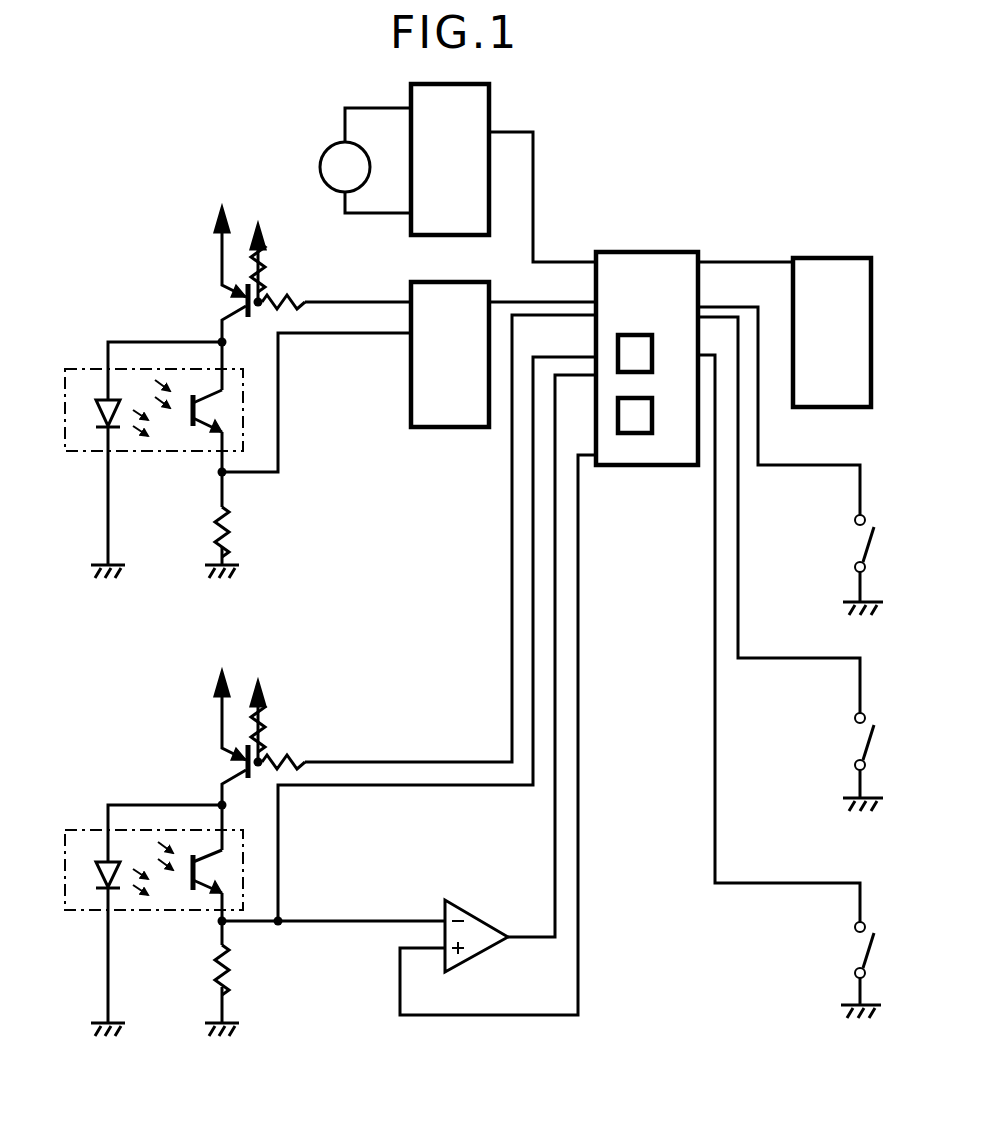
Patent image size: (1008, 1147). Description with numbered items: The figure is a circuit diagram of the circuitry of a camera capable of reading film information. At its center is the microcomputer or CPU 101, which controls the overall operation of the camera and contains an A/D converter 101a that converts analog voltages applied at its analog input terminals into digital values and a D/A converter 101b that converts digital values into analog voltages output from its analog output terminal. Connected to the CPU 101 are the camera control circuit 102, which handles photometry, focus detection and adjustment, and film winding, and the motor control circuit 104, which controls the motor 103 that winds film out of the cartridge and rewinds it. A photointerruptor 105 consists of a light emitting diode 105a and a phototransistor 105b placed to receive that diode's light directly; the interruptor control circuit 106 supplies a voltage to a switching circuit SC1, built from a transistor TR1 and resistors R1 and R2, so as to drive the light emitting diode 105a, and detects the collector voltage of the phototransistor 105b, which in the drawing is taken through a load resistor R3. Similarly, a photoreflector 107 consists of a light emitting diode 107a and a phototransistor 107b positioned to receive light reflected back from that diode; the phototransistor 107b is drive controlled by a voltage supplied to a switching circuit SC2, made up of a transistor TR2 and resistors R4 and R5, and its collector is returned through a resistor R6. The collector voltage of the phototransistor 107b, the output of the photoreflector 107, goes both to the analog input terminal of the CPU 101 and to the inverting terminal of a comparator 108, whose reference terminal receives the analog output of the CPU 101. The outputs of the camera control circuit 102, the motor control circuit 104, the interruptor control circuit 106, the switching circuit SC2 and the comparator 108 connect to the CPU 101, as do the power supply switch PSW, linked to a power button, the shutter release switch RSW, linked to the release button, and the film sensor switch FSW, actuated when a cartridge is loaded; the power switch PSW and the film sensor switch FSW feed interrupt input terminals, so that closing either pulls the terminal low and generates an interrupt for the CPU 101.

The microcomputer (CPU) 101 is at (640, 252).
The A/D converter 101a is at (633, 348).
The D/A converter 101b is at (640, 420).
The camera control circuit (CC) 102 is at (815, 258).
The motor (M) 103 is at (332, 150).
The motor control circuit (MC) 104 is at (489, 110).
The photointerruptor 105 is at (100, 451).
The light emitting diode 105a is at (100, 398).
The phototransistor 105b is at (220, 412).
The interruptor control circuit (IC) 106 is at (421, 430).
The photoreflector 107 is at (100, 830).
The light emitting diode 107a is at (120, 890).
The phototransistor 107b is at (225, 874).
The comparator (COM) 108 is at (478, 944).
The transistor TR1 is at (241, 298).
The transistor TR2 is at (246, 760).
The resistor R1 is at (263, 277).
The resistor R2 is at (286, 294).
The resistor R3 is at (247, 538).
The resistor R4 is at (266, 733).
The resistor R5 is at (286, 756).
The resistor R6 is at (247, 975).
The switching circuit SC1 is at (189, 232).
The switching circuit SC2 is at (186, 724).
The power supply switch PSW is at (818, 543).
The shutter release switch RSW is at (815, 741).
The film sensor switch FSW is at (809, 950).